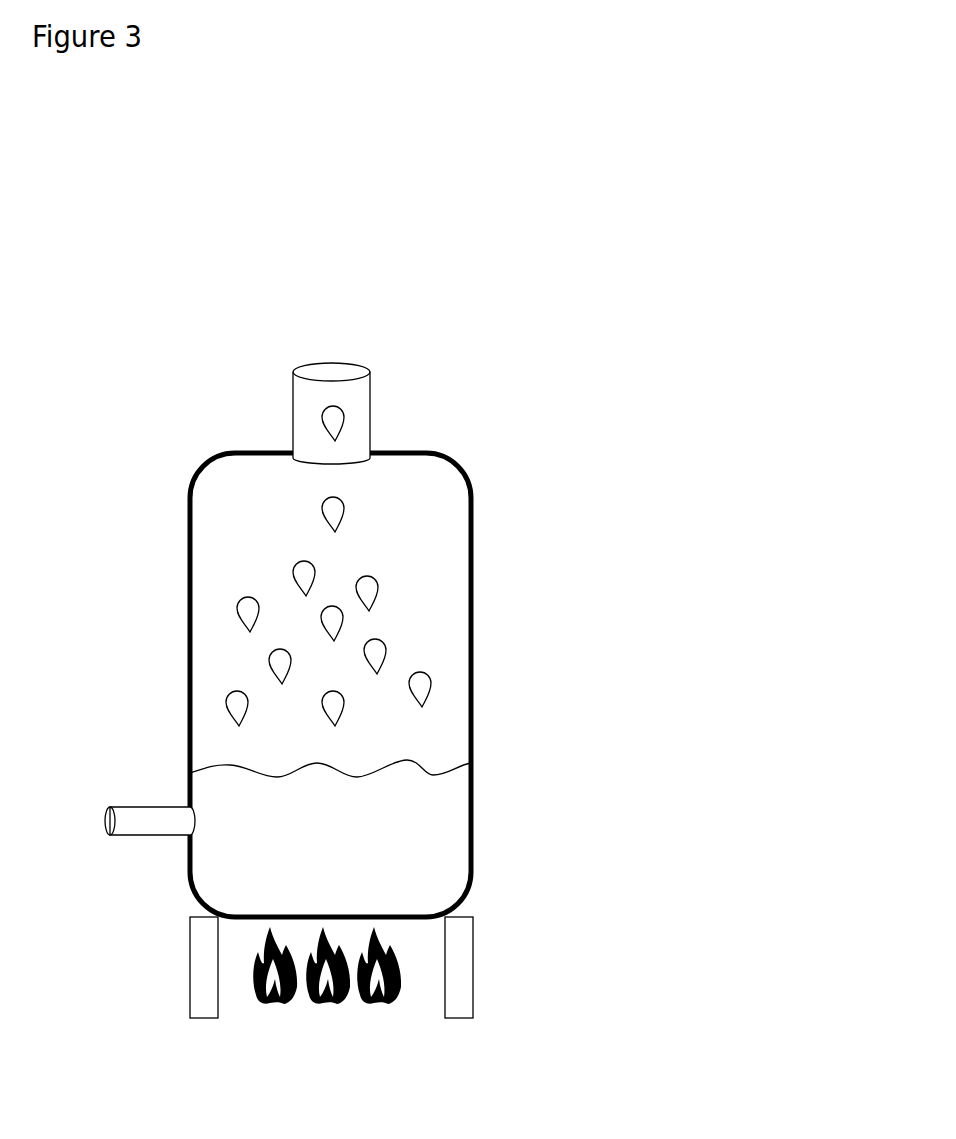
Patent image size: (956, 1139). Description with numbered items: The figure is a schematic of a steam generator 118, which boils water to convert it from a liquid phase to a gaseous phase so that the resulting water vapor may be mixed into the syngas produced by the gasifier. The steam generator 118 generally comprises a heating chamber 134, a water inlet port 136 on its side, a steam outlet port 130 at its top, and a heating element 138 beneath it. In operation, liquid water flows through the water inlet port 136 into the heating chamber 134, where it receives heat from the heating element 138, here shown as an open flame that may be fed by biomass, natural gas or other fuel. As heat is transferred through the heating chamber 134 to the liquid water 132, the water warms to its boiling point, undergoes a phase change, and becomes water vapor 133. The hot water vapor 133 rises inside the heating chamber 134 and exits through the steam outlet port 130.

The steam generator 118 is at (534, 361).
The steam outlet port 130 is at (293, 387).
The liquid water 132 is at (402, 852).
The water vapor 133 is at (425, 672).
The heating chamber 134 is at (218, 657).
The water inlet port 136 is at (148, 805).
The heating element 138 is at (347, 998).